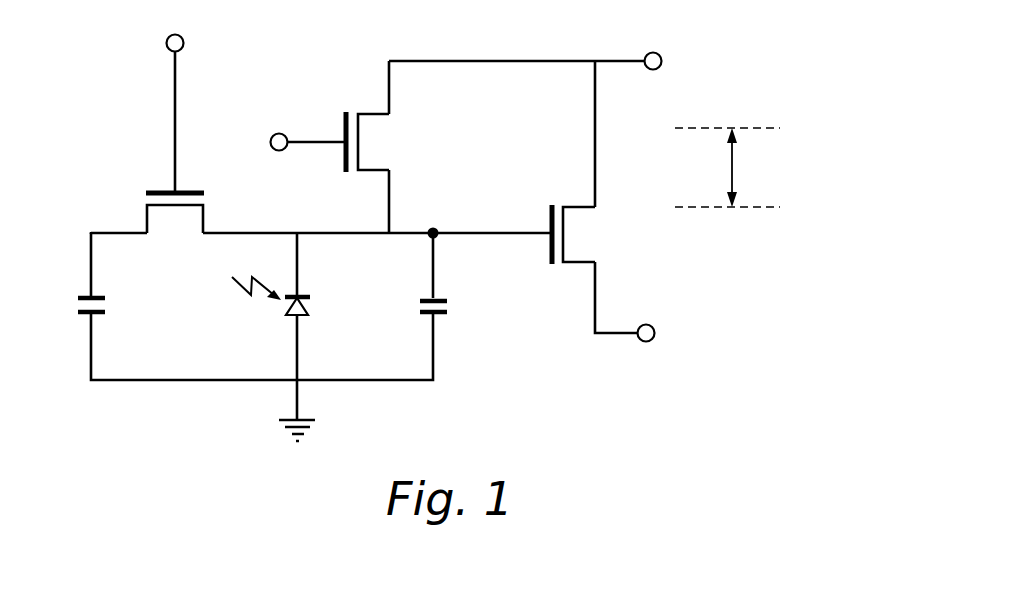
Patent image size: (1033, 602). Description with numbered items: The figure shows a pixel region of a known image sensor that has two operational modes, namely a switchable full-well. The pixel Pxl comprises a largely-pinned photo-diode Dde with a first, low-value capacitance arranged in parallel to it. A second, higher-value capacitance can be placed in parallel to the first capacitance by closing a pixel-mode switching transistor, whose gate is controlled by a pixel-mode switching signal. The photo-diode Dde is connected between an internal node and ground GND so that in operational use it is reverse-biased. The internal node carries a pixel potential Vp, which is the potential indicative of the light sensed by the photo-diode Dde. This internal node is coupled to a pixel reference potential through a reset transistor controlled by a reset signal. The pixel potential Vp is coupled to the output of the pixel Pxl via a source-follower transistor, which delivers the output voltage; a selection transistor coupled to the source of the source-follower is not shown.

The pixel Pxl is at (118, 147).
The photo-diode Dde is at (299, 297).
The pixel potential Vp is at (667, 167).
The ground GND is at (297, 430).